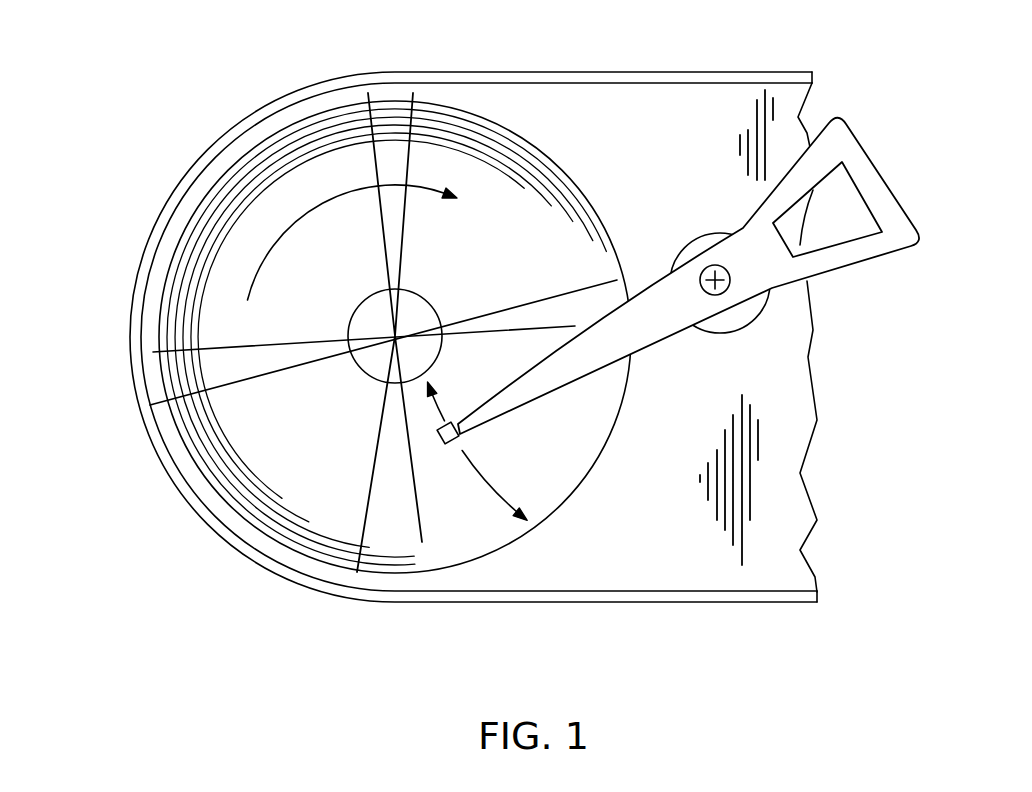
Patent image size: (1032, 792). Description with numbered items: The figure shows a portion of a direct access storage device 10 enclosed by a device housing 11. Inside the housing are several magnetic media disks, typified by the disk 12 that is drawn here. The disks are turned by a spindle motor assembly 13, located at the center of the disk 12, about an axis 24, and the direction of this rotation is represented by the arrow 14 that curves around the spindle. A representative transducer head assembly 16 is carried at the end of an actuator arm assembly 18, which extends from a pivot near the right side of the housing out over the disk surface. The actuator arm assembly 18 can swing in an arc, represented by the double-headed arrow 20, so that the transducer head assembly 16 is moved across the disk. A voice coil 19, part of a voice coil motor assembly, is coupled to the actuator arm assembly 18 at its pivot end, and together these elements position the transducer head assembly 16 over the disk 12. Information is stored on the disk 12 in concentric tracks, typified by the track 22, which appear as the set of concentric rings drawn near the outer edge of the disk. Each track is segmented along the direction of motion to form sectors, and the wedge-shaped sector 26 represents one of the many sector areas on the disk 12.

The direct access storage device 10 is at (493, 313).
The device housing 11 is at (768, 72).
The disk 12 is at (410, 337).
The spindle motor assembly 13 is at (440, 308).
The arrow 14 is at (295, 227).
The transducer head assembly 16 is at (456, 437).
The actuator arm assembly 18 is at (705, 276).
The voice coil 19 is at (878, 150).
The arrow 20 is at (499, 500).
The track 22 is at (268, 182).
The axis 24 is at (402, 330).
The sector 26 is at (390, 214).